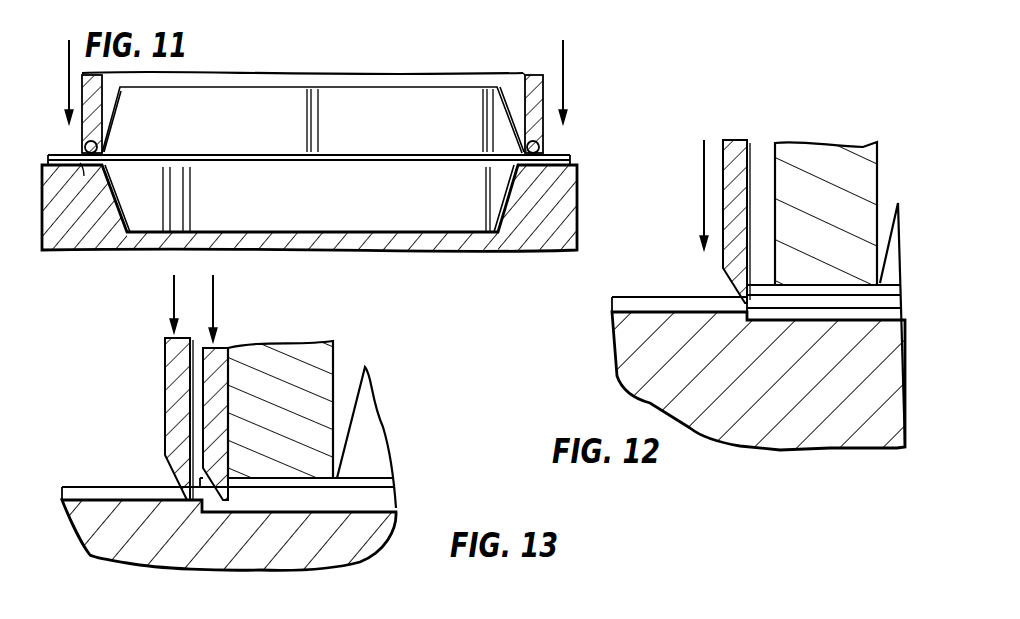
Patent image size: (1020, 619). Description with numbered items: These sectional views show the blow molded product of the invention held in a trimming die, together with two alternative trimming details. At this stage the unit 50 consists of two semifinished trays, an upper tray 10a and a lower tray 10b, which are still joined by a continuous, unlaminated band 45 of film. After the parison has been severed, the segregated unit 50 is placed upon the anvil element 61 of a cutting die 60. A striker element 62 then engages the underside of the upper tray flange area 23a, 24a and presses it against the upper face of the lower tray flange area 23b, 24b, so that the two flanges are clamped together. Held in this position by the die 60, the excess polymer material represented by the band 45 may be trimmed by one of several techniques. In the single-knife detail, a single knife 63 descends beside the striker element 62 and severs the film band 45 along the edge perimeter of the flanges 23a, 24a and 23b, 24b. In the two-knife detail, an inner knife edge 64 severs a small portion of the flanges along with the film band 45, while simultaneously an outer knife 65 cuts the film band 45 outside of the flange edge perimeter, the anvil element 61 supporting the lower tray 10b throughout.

In FIG. 11, the upper tray 10a is at (383, 121).
In FIG. 12, the upper tray 10a is at (892, 325).
In FIG. 13, the upper tray 10a is at (375, 438).
In FIG. 11, the lower tray 10b is at (383, 208).
In FIG. 13, the lower tray 10b is at (367, 532).
In FIG. 11, the upper tray flange area 23a is at (268, 155).
In FIG. 12, the upper tray flange area 23a is at (828, 285).
In FIG. 13, the upper tray flange area 23a is at (303, 478).
In FIG. 11, the lower tray flange area 23b is at (243, 168).
In FIG. 12, the lower tray flange area 23b is at (818, 322).
In FIG. 13, the lower tray flange area 23b is at (263, 513).
In FIG. 11, the upper tray flange area 24a is at (97, 149).
In FIG. 11, the lower tray flange area 24b is at (80, 164).
In FIG. 11, the film band 45 is at (62, 155).
In FIG. 12, the film band 45 is at (657, 303).
In FIG. 13, the film band 45 is at (113, 483).
In FIG. 11, the unit 50 is at (289, 110).
In FIG. 11, the cutting die 60 is at (590, 163).
In FIG. 11, the anvil element 61 is at (578, 220).
In FIG. 12, the anvil element 61 is at (640, 362).
In FIG. 13, the anvil element 61 is at (165, 539).
In FIG. 11, the striker element 62 is at (533, 74).
In FIG. 12, the striker element 62 is at (815, 163).
In FIG. 13, the striker element 62 is at (302, 358).
In FIG. 12, the single knife 63 is at (735, 147).
In FIG. 13, the inner knife edge 64 is at (213, 373).
In FIG. 13, the outer knife 65 is at (175, 365).